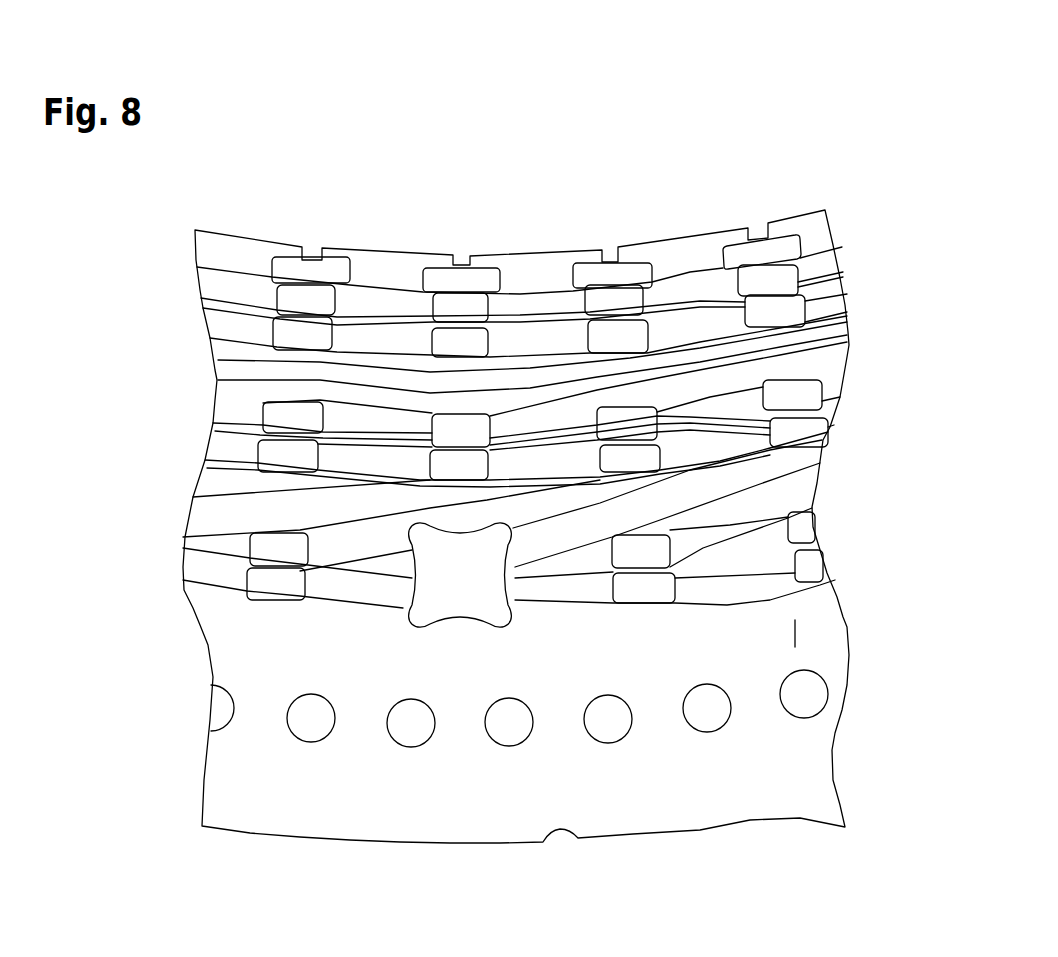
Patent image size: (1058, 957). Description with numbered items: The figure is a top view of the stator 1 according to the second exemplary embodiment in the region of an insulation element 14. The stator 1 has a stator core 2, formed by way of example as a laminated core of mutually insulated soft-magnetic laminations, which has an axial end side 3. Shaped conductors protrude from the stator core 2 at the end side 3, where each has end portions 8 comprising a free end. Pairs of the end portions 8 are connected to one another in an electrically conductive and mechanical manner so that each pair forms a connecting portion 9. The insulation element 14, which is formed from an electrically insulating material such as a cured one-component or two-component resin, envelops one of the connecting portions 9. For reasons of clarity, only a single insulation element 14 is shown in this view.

The stator 1 is at (893, 307).
The stator core 2 is at (795, 767).
The axial end side 3 is at (795, 647).
The end portion 8 is at (643, 547).
The connecting portion 9 is at (616, 573).
The insulation element 14 is at (466, 595).